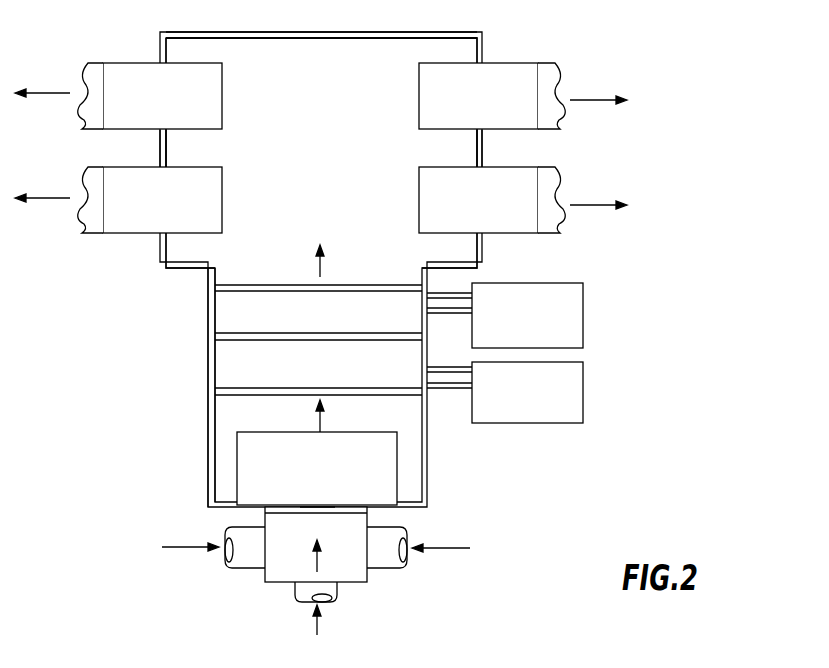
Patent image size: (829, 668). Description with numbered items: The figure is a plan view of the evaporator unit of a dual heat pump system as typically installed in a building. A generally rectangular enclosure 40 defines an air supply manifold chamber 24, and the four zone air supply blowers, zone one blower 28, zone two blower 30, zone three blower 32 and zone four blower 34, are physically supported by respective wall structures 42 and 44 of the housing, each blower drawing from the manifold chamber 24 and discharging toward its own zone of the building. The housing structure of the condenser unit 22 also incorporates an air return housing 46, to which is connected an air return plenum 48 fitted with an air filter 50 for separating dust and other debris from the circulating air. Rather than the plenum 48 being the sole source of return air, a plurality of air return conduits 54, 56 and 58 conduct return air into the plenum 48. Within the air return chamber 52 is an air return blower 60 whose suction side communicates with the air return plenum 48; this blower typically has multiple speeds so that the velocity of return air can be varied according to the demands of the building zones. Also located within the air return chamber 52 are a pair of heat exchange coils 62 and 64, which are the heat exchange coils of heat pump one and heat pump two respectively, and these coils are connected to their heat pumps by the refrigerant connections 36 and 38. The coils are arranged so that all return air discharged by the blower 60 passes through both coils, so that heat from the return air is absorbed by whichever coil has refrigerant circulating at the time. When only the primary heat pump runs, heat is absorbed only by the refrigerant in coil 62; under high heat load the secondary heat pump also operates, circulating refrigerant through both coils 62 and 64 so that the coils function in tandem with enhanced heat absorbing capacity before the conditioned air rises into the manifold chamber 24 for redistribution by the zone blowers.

The condenser unit 22 is at (490, 31).
The air supply manifold chamber 24 is at (343, 149).
The zone 1 blower 28 is at (95, 73).
The zone 2 blower 30 is at (557, 80).
The zone 3 blower 32 is at (82, 228).
The zone 4 blower 34 is at (560, 195).
The heat pump 1 refrigerant lines 36 is at (453, 313).
The heat pump 2 refrigerant lines 38 is at (453, 388).
The enclosure 40 is at (346, 33).
The wall structure 42 is at (160, 152).
The wall structure 44 is at (482, 152).
The air return housing 46 is at (208, 427).
The air return plenum 48 is at (268, 581).
The air filter 50 is at (319, 510).
The air return chamber 52 is at (385, 427).
The air return conduit 54 is at (225, 561).
The air return conduit 56 is at (410, 560).
The air return conduit 58 is at (326, 598).
The air return blower 60 is at (397, 463).
The heat exchange coil 62 is at (242, 302).
The heat exchange coil 64 is at (258, 370).